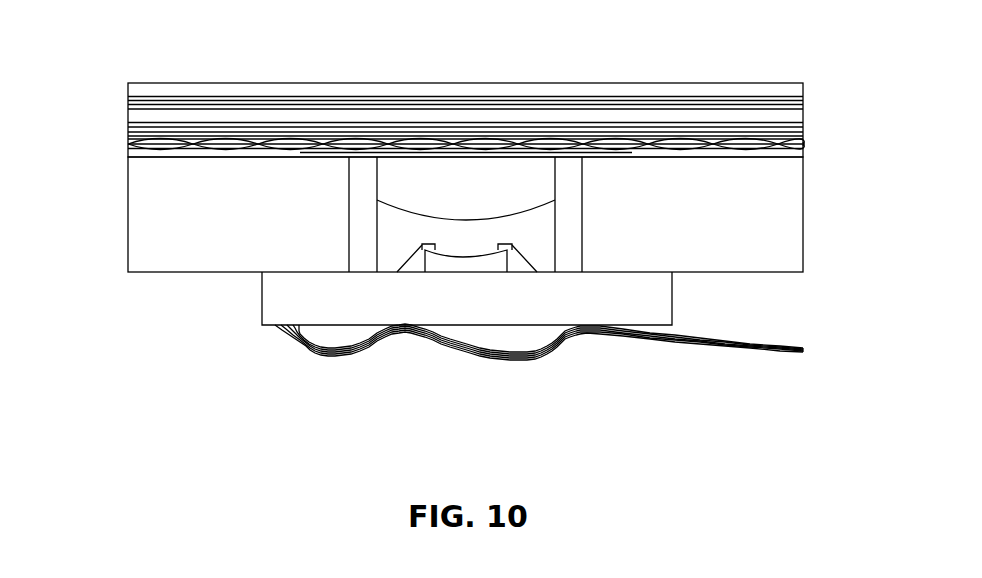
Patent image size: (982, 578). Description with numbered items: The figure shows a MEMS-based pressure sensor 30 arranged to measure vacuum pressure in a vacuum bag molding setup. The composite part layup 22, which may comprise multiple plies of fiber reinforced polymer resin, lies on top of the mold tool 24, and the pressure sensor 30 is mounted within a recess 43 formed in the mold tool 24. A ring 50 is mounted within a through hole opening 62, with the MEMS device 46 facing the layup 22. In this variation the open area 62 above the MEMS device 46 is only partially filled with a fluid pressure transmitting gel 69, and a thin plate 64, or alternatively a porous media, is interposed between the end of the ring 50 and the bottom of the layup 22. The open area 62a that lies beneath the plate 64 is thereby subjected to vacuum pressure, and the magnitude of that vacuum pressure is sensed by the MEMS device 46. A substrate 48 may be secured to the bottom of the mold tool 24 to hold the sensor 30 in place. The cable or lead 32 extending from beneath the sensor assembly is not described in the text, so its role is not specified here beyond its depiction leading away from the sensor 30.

The composite part layup 22 is at (138, 118).
The mold tool 24 is at (162, 237).
The recess 43 is at (344, 189).
The through hole opening 62 is at (539, 192).
The open area beneath the plate 62a is at (443, 180).
The thin plate 64 is at (512, 165).
The ring 50 is at (358, 237).
The fluid pressure transmitting gel 69 is at (390, 250).
The MEMS device 46 is at (474, 263).
The substrate 48 is at (348, 308).
The pressure sensor 30 is at (438, 359).
The ribbon cable 32 is at (730, 351).